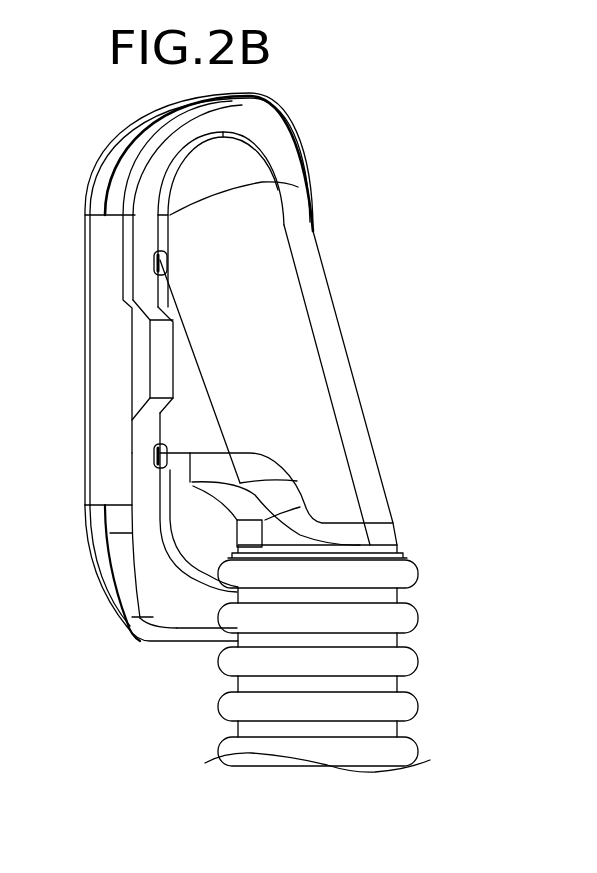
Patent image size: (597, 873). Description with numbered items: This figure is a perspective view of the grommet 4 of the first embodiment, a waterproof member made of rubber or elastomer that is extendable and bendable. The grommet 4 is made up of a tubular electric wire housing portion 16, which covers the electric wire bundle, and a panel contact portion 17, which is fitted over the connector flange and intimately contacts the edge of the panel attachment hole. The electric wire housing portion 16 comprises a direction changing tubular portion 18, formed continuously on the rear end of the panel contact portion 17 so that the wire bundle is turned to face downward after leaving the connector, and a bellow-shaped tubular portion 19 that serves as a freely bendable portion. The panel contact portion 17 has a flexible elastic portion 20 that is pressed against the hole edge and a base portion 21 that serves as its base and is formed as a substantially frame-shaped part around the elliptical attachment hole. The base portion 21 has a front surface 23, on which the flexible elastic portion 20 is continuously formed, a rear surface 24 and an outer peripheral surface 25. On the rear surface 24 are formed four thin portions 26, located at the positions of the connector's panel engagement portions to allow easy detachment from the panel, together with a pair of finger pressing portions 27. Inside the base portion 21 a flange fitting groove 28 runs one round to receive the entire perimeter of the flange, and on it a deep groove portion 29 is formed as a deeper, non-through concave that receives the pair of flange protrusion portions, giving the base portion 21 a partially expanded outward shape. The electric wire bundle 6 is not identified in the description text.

The grommet 4 is at (400, 332).
The cable 6 is at (13, 550).
The tubular electric wire housing portion 16 is at (368, 612).
The panel contact portion 17 is at (113, 350).
The direction changing tubular portion 18 is at (368, 480).
The bellow-shaped tubular portion 19 is at (403, 617).
The flexible elastic portion 20 is at (111, 144).
The base portion 21 is at (258, 112).
The front surface 23 is at (113, 433).
The rear surface 24 is at (148, 518).
The outer peripheral surface 25 is at (113, 477).
The thin portions 26 is at (168, 260).
The finger pressing portions 27 is at (161, 357).
The flange fitting groove 28 is at (115, 240).
The deep groove portion 29 is at (177, 627).